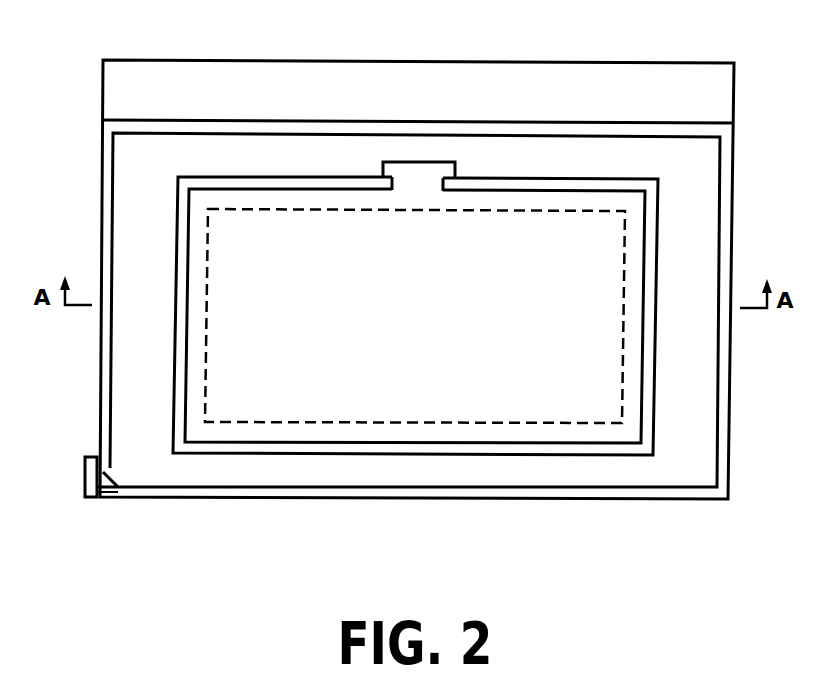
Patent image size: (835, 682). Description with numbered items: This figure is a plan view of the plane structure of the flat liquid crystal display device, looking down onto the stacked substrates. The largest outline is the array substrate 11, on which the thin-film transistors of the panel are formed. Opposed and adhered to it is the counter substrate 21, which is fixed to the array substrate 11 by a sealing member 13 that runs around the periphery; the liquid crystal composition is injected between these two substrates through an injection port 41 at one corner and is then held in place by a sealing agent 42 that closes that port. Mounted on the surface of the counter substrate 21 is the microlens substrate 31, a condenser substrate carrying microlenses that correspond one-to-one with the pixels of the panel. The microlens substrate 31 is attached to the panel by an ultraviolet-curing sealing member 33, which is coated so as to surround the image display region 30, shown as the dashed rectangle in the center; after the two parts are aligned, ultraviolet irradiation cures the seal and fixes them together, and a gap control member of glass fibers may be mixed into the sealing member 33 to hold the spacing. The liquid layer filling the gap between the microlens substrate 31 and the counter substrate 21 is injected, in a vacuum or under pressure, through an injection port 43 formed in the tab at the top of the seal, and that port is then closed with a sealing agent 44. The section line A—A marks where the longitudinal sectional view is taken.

The array substrate 11 is at (632, 62).
The sealing member 13 is at (729, 177).
The counter substrate 21 is at (703, 123).
The image display region 30 is at (410, 413).
The microlens substrate 31 is at (654, 393).
The sealing member 33 is at (652, 275).
The injection port 41 is at (113, 495).
The sealing agent 42 is at (85, 478).
The injection port 43 is at (428, 190).
The sealing agent 44 is at (400, 164).